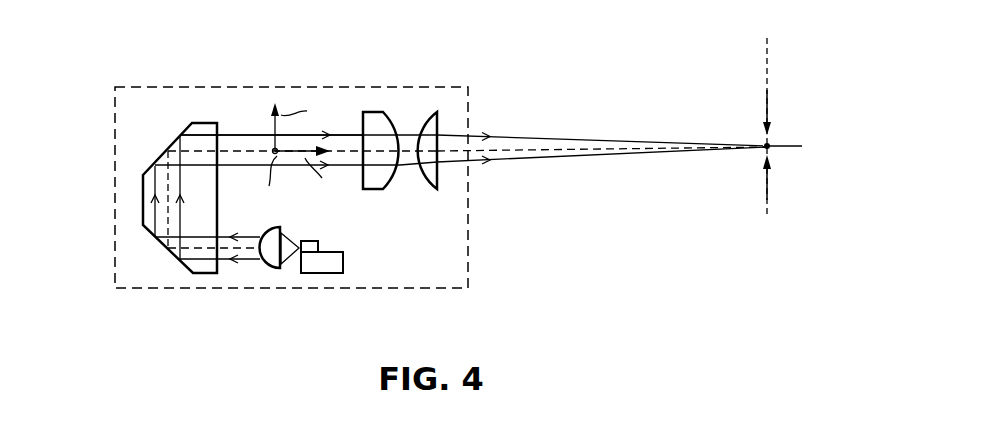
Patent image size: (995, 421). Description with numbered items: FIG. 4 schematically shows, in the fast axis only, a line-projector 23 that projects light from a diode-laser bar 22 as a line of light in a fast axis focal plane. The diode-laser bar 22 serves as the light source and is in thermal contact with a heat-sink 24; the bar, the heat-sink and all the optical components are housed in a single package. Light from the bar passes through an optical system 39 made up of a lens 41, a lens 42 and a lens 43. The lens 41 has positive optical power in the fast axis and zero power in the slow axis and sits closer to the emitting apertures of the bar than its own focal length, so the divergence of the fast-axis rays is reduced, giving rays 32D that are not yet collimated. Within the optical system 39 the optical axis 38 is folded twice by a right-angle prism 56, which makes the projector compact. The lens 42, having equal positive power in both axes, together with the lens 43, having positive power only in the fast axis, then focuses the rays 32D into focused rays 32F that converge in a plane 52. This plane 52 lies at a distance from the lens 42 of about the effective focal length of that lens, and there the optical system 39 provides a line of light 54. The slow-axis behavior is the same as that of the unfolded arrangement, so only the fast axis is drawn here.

The diode-laser bar 22 is at (308, 250).
The line-projector embodiment 23 is at (515, 267).
The heat-sink 24 is at (330, 267).
The reduced-divergence fast-axis rays 32D is at (233, 135).
The focused rays 32F is at (600, 142).
The optical axis 38 is at (168, 212).
The optical system 39 is at (400, 242).
The lens 41 is at (270, 262).
The lens 42 is at (373, 111).
The lens 43 is at (431, 111).
The plane 52 is at (767, 68).
The line of light 54 is at (765, 141).
The prism 56 is at (152, 146).